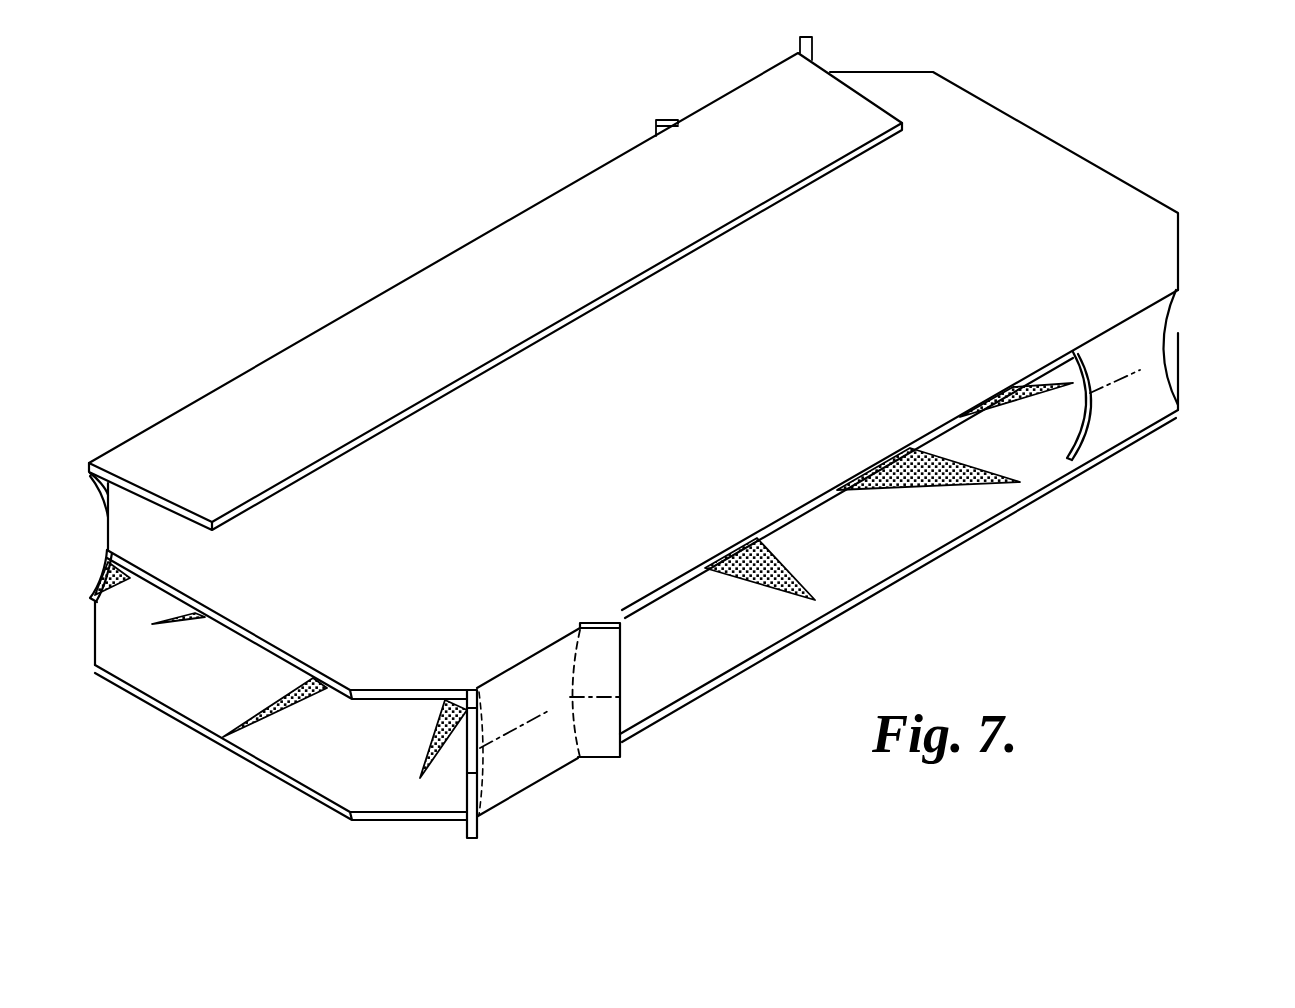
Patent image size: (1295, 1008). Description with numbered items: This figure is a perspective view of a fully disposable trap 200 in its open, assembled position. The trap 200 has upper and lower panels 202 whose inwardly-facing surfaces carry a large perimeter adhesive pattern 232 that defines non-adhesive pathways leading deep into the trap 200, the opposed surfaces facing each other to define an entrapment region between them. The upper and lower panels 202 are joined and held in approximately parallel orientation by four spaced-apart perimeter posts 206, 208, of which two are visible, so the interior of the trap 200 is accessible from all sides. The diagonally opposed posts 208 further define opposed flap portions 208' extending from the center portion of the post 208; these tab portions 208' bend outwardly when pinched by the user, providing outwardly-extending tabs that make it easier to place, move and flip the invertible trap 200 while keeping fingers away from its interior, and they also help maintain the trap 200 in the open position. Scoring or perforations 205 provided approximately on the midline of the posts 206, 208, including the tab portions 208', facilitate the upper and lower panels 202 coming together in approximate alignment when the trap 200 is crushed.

The fully disposable trap 200 is at (1123, 114).
The upper and lower panels 202 is at (962, 92).
The scoring or perforations 205 is at (1133, 373).
The perimeter post 206 is at (1147, 313).
The perimeter post 208 is at (636, 601).
The flap portions 208' is at (558, 748).
The adhesive pattern 232 is at (790, 570).